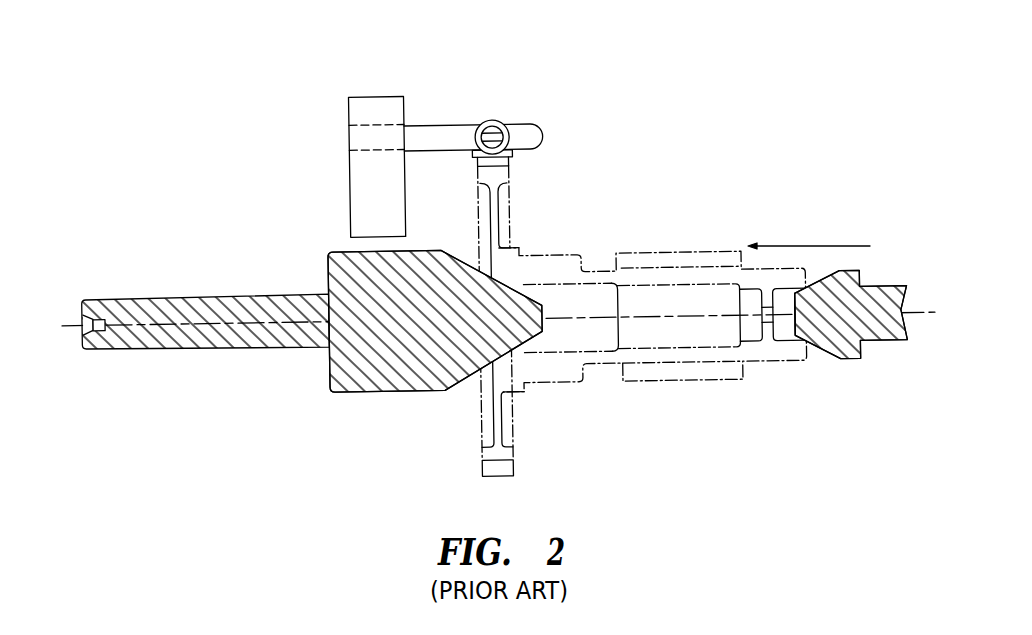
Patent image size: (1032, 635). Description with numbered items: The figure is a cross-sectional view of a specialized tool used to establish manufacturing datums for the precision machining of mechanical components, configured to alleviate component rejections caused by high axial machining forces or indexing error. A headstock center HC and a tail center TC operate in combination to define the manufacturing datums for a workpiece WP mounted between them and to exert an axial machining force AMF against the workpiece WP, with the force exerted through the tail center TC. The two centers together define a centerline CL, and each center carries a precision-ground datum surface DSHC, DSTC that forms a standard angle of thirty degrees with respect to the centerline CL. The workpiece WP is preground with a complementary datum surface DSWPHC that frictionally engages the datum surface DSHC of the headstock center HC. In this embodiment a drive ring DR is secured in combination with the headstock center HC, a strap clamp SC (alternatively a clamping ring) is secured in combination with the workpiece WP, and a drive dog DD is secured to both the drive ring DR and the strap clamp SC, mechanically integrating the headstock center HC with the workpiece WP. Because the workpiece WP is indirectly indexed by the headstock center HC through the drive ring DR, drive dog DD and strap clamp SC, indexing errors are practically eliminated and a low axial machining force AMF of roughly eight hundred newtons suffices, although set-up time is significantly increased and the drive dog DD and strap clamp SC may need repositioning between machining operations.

The headstock center HC is at (327, 244).
The tail center TC is at (835, 360).
The workpiece WP is at (562, 246).
The drive ring DR is at (342, 112).
The drive dog DD is at (444, 116).
The strap clamp SC is at (492, 113).
The centerline CL is at (693, 318).
The axial machining force AMF is at (809, 234).
The datum surface of the workpiece DSWPHC is at (502, 270).
The datum surface of the headstock center DSHC is at (489, 378).
The datum surface of the tail center DSTC is at (822, 348).